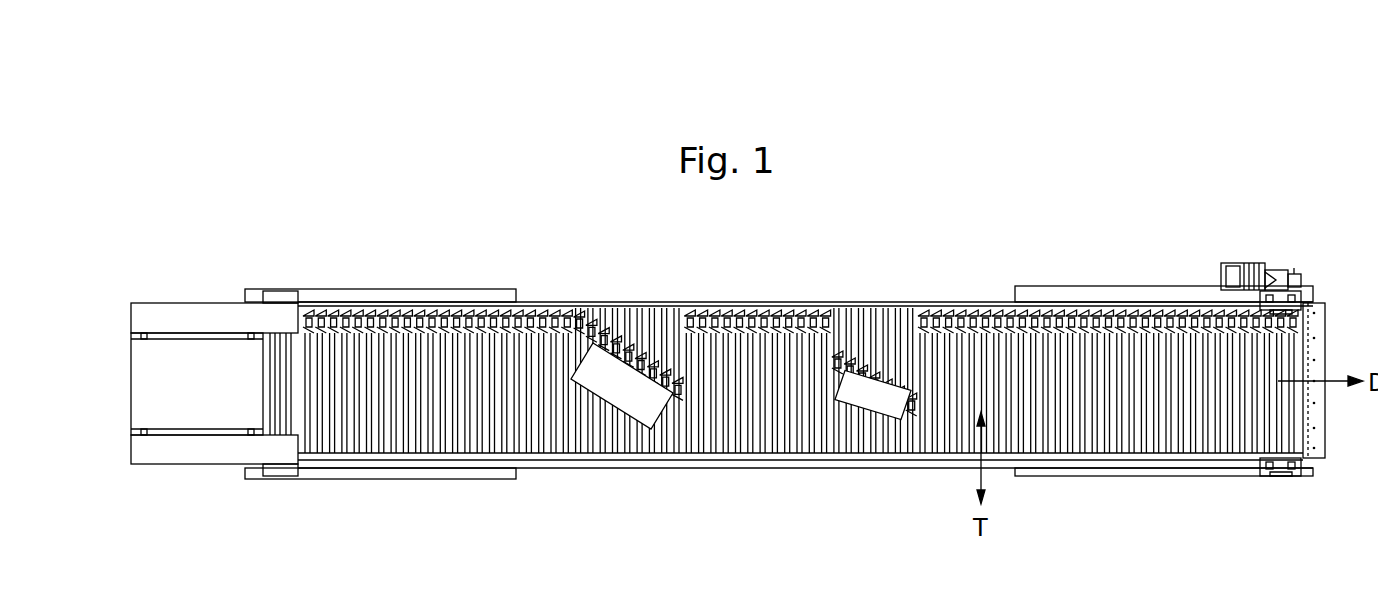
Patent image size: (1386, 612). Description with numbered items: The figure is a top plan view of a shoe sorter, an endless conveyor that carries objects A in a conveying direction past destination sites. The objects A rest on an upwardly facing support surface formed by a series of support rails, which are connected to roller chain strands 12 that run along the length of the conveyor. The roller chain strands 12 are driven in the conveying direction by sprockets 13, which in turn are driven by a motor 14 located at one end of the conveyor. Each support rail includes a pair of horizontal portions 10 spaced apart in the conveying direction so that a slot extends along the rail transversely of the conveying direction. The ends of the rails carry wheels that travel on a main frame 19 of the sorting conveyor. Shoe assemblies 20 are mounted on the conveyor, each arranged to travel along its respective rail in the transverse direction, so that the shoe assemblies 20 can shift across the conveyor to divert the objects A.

The horizontal portions 10 is at (632, 318).
The roller chain strands 12 is at (850, 302).
The sprockets 13 is at (1283, 298).
The motor 14 is at (1268, 262).
The main frame 19 is at (560, 459).
The shoe assemblies 20 is at (716, 298).
The objects A is at (640, 400).